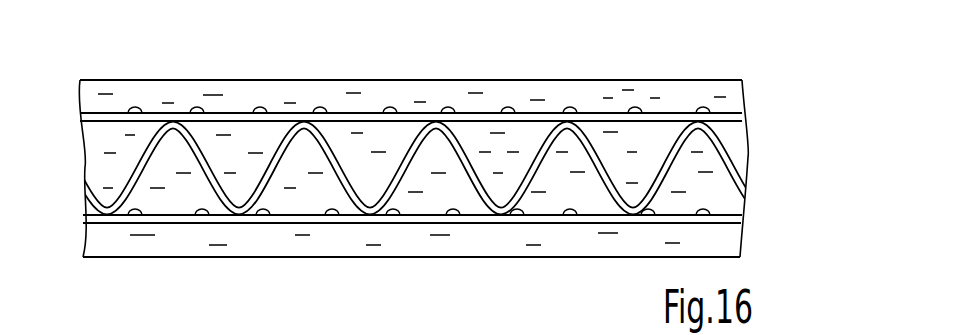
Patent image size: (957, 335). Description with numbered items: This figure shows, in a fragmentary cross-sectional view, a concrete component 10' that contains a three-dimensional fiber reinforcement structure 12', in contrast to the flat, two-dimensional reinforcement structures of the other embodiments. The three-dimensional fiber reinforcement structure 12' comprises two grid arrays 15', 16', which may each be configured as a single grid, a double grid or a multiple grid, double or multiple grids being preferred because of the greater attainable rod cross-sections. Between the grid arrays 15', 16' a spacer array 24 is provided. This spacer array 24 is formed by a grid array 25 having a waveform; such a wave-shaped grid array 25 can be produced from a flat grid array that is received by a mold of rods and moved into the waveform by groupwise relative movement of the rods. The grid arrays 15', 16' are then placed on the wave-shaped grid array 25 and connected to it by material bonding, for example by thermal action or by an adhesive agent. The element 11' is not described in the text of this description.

The concrete component 10' is at (413, 136).
The three-dimensional fiber reinforcement structure 12' is at (429, 64).
The lower cover layer 11' is at (412, 279).
The grid array 15' is at (411, 71).
The grid array 16' is at (412, 272).
The spacer array 24 is at (737, 140).
The grid array 25 is at (728, 172).